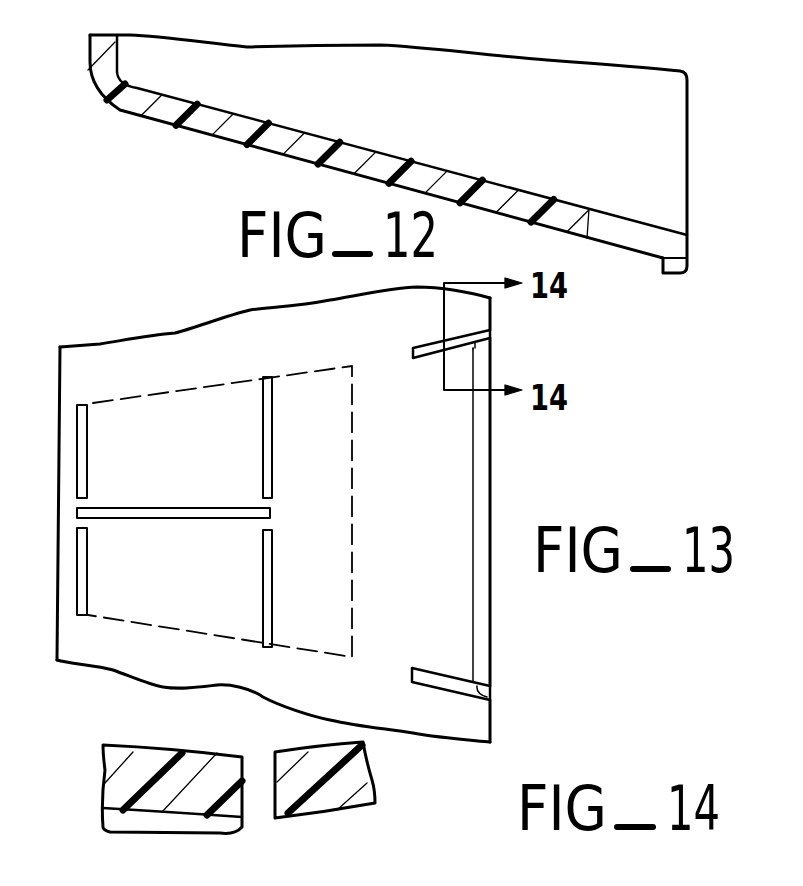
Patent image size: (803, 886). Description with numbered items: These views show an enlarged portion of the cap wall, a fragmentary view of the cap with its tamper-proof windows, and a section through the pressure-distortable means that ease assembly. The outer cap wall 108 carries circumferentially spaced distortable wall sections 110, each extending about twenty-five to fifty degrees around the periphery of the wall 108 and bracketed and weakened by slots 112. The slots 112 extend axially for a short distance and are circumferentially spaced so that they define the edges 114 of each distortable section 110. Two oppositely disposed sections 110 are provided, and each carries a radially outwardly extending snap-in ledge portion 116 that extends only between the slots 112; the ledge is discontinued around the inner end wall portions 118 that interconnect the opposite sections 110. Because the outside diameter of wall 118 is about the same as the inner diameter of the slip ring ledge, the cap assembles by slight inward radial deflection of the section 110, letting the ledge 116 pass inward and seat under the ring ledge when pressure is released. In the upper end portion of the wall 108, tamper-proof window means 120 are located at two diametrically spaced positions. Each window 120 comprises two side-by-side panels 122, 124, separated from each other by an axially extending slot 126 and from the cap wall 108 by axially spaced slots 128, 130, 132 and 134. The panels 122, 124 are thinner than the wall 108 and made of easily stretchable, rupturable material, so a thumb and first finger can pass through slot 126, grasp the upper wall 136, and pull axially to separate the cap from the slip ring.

In FIG. 12, the outer cap wall 108 is at (260, 150).
In FIG. 13, the outer cap wall 108 is at (222, 352).
In FIG. 13, the distortable wall section 110 is at (472, 532).
In FIG. 12, the slot 112 is at (633, 237).
In FIG. 13, the slot 112 is at (490, 338).
In FIG. 14, the slot 112 is at (262, 782).
In FIG. 13, the edge of distortable section 114 is at (483, 342).
In FIG. 12, the snap-in ledge portion 116 is at (673, 277).
In FIG. 13, the snap-in ledge portion 116 is at (483, 473).
In FIG. 14, the snap-in ledge portion 116 is at (225, 825).
In FIG. 13, the inner end wall portion 118 is at (495, 312).
In FIG. 14, the inner end wall portion 118 is at (358, 808).
In FIG. 13, the tamper-proof window means 120 is at (153, 378).
In FIG. 13, the panel 122 is at (210, 475).
In FIG. 13, the panel 124 is at (210, 603).
In FIG. 13, the axially extending slot 126 is at (160, 517).
In FIG. 13, the axially spaced slot 128 is at (87, 432).
In FIG. 13, the axially spaced slot 130 is at (272, 442).
In FIG. 13, the axially spaced slot 132 is at (87, 545).
In FIG. 13, the axially spaced slot 134 is at (272, 572).
In FIG. 13, the upper wall 136 is at (67, 387).